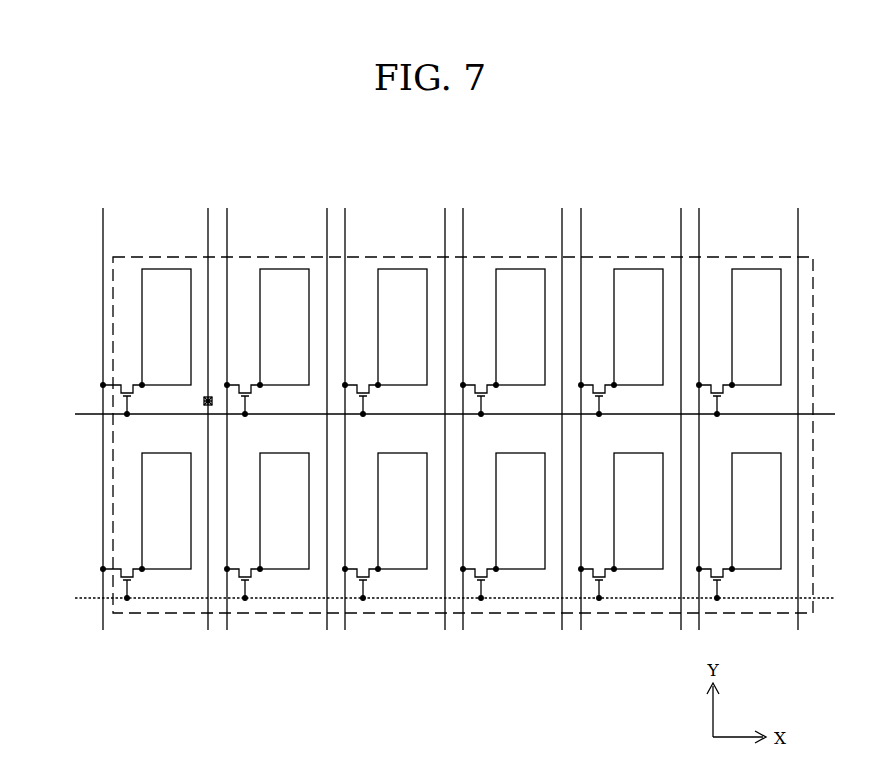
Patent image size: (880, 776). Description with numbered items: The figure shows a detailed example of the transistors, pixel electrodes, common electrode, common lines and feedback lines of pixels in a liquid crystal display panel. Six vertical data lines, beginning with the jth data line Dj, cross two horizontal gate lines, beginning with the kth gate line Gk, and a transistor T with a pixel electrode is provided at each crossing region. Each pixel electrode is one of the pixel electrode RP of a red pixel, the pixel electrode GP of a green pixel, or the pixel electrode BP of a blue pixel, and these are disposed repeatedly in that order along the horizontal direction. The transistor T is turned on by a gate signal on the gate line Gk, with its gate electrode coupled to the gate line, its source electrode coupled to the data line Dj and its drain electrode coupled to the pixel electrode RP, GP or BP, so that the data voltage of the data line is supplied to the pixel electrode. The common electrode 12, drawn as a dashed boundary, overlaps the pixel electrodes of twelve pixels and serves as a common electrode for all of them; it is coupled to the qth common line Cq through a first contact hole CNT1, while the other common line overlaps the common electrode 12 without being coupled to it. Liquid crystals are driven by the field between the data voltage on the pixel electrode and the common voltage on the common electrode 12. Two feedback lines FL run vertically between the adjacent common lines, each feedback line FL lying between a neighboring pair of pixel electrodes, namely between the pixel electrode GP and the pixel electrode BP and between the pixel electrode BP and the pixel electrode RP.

The common electrode 12 is at (113, 305).
The transistor T is at (122, 388).
The first contact hole CNT1 is at (205, 403).
The kth gate line Gk is at (438, 414).
The jth data line Dj is at (103, 406).
The qth common line Cq is at (208, 222).
The feedback line FL is at (445, 218).
The pixel electrode of red pixel RP is at (156, 337).
The pixel electrode of green pixel GP is at (274, 337).
The pixel electrode of blue pixel BP is at (392, 337).